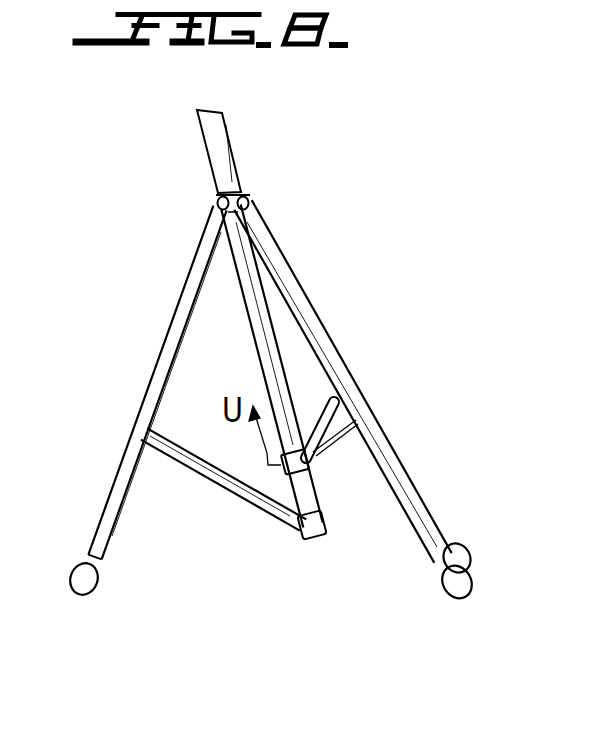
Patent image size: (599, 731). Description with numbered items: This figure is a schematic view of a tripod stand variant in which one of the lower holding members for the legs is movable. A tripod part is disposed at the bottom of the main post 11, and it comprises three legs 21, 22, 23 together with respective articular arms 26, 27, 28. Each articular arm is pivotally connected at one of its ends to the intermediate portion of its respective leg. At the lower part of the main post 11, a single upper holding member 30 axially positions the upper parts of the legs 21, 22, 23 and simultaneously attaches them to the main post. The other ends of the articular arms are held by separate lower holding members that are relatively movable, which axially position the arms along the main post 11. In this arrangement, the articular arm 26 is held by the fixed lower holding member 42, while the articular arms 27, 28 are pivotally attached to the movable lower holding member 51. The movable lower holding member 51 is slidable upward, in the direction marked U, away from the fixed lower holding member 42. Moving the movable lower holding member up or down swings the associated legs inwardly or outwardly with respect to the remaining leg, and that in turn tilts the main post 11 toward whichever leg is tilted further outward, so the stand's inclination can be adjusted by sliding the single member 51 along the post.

The main post 11 is at (232, 161).
The upper holding member 30 is at (241, 195).
The leg 21 is at (176, 317).
The leg 22 is at (262, 243).
The leg 23 is at (392, 445).
The articular arm 26 is at (210, 481).
The articular arm 27 is at (328, 345).
The articular arm 28 is at (373, 413).
The movable lower holding member 51 is at (310, 483).
The fixed lower holding member 42 is at (313, 538).